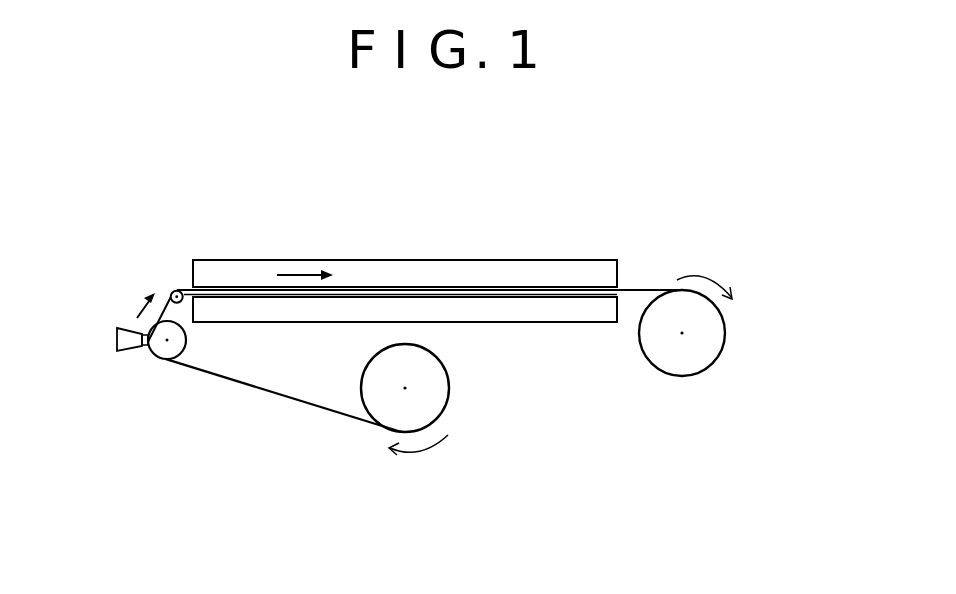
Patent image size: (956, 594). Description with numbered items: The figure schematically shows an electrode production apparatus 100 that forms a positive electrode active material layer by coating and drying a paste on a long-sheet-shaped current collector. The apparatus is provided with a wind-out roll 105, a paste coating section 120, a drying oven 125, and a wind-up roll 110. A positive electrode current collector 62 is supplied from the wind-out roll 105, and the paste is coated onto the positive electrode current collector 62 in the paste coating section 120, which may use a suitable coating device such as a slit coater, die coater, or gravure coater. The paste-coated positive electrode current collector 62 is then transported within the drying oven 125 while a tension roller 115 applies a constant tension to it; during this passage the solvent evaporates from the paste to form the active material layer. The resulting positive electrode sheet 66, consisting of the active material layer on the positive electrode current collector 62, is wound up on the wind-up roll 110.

The electrode production apparatus 100 is at (735, 116).
The drying oven 125 is at (526, 257).
The positive electrode sheet 66 is at (636, 288).
The positive electrode current collector 62 is at (333, 415).
The tension roller 115 is at (174, 290).
The paste coating section 120 is at (145, 354).
The wind-out roll 105 is at (440, 388).
The wind-up roll 110 is at (713, 347).